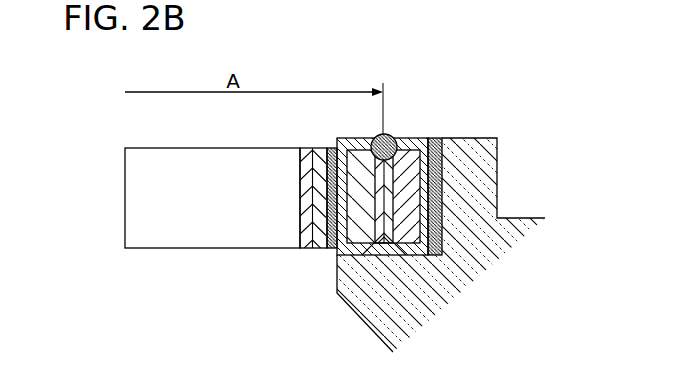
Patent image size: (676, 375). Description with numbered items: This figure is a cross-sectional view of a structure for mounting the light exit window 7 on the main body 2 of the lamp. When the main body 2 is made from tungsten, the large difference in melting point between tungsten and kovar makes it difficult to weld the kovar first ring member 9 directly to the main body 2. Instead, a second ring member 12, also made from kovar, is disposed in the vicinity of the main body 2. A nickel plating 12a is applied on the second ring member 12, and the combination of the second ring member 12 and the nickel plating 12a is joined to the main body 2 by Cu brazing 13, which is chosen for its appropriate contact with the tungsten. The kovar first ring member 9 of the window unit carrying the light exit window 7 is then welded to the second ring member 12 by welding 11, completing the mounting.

The main body 2 is at (485, 207).
The light exit window 7 is at (173, 227).
The first ring member 9 is at (362, 244).
The welding 11 is at (378, 134).
The second ring member 12 is at (403, 150).
The nickel plating 12a is at (424, 139).
The Cu brazing 13 is at (442, 138).